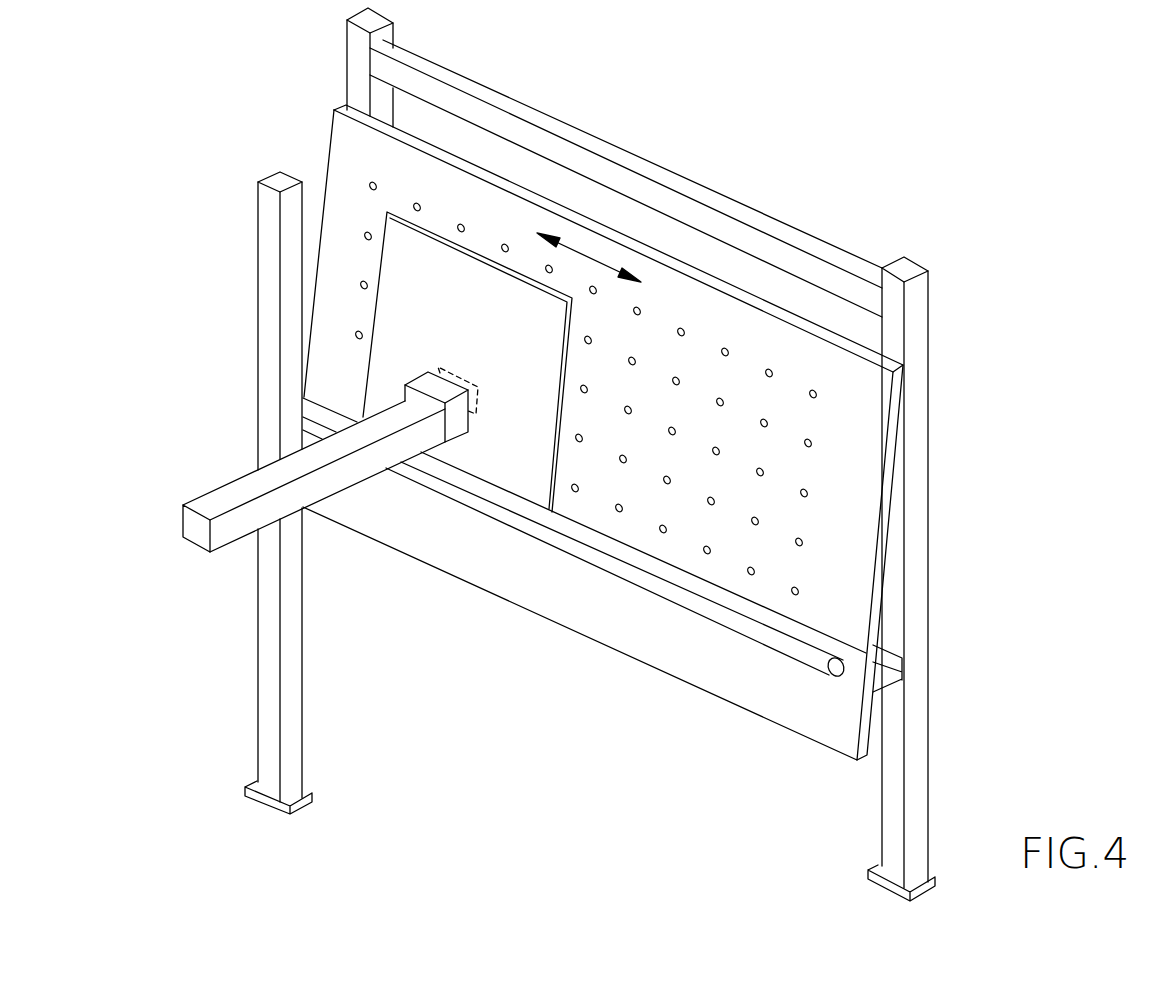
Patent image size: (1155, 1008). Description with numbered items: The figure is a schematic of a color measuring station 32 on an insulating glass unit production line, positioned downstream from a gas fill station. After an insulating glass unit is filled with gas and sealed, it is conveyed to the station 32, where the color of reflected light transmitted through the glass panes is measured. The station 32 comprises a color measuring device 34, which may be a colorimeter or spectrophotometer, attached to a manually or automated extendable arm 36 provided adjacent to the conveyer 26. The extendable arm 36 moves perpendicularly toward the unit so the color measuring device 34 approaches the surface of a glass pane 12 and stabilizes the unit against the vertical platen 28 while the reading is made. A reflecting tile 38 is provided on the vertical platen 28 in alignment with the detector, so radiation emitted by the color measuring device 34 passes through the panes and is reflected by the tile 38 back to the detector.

The glass pane 12 is at (408, 283).
The conveyer 26 is at (622, 546).
The vertical platen 28 is at (863, 410).
The color measuring station 32 is at (568, 777).
The color measuring device 34 is at (457, 420).
The extendable arm 36 is at (312, 482).
The reflecting tile 38 is at (472, 413).